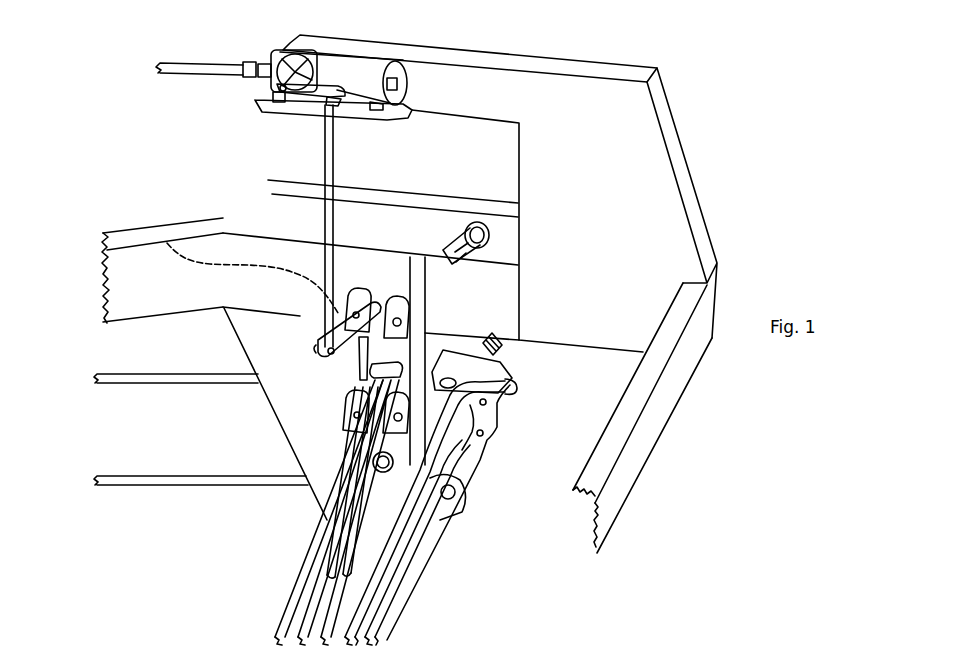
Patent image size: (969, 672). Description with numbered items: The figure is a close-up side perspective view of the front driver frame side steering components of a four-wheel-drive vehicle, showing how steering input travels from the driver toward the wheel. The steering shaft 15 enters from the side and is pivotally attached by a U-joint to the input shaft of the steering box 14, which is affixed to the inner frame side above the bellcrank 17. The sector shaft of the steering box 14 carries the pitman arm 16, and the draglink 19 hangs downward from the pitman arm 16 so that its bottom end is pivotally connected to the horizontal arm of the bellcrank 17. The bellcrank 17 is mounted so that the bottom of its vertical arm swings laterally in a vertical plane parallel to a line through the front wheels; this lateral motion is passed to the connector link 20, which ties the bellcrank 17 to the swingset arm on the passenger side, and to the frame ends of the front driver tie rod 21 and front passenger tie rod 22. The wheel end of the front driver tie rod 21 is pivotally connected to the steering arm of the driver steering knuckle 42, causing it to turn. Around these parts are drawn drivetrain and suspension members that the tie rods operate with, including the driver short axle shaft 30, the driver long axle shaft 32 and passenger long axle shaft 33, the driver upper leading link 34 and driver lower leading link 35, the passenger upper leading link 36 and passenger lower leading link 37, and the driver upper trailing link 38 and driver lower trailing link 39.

The steering box 14 is at (350, 53).
The steering shaft 15 is at (212, 70).
The pitman arm 16 is at (270, 53).
The bellcrank 17 is at (163, 233).
The draglink 19 is at (330, 163).
The connector link 20 is at (352, 446).
The front driver tie rod 21 is at (490, 442).
The front passenger tie rod 22 is at (345, 435).
The driver short axle shaft 30 is at (468, 264).
The driver long axle shaft 32 is at (420, 528).
The passenger long axle shaft 33 is at (320, 583).
The driver upper leading link 34 is at (473, 480).
The driver lower leading link 35 is at (410, 592).
The passenger upper leading link 36 is at (330, 505).
The passenger lower leading link 37 is at (287, 612).
The driver upper trailing link 38 is at (177, 377).
The driver lower trailing link 39 is at (188, 478).
The driver steering knuckle 42 is at (513, 360).